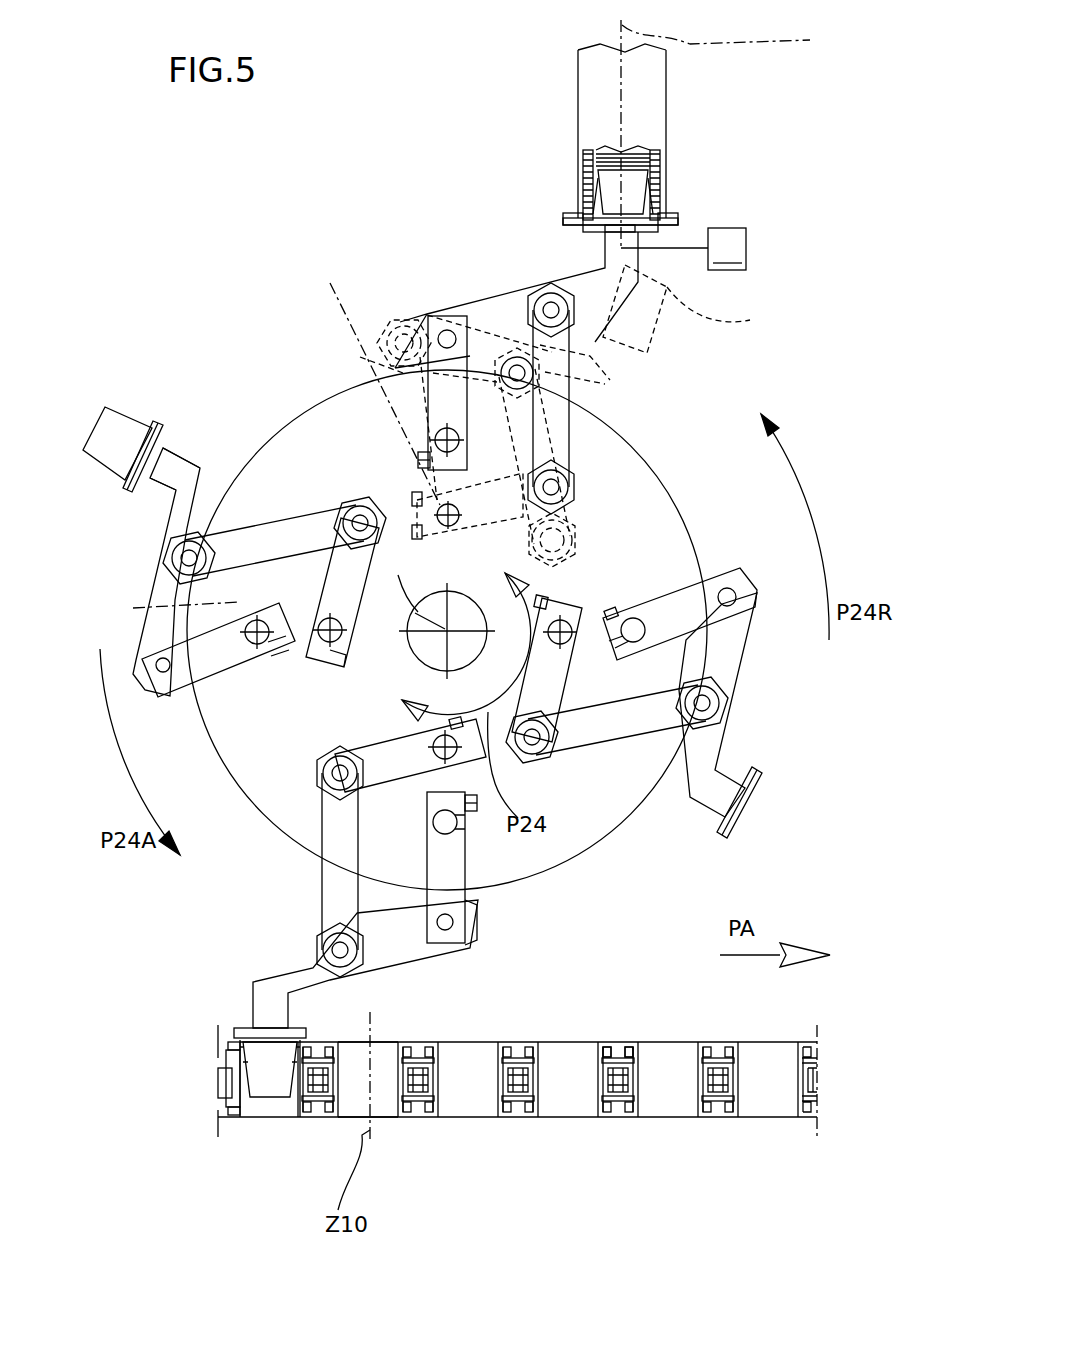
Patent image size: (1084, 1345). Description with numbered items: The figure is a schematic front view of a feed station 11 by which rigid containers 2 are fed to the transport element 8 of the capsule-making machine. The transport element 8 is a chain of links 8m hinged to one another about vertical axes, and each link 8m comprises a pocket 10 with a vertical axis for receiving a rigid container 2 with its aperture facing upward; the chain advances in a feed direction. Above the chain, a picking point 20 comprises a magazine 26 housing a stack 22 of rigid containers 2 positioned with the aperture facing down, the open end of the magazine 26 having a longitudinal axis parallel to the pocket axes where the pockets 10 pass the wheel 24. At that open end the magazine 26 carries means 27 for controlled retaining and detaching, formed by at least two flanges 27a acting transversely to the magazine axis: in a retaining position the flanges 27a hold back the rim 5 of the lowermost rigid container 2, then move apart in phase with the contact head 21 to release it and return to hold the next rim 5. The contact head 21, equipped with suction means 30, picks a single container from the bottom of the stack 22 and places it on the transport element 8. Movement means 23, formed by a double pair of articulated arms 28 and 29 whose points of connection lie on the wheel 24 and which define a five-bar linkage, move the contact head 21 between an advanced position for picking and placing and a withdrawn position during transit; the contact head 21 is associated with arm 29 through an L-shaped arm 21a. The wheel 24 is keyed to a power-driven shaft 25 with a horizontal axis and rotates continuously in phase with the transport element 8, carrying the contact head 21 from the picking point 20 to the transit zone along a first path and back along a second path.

The rigid container 2 is at (115, 425).
The rim 5 is at (668, 210).
The transport element 8 is at (531, 1128).
The chain link 8m is at (606, 1045).
The pocket 10 is at (386, 1058).
The feed station 11 is at (824, 288).
The picking point 20 is at (678, 238).
The contact head 21 is at (588, 232).
The arm 21a is at (185, 478).
The stack 22 is at (653, 150).
The movement means 23 is at (261, 512).
The wheel 24 is at (653, 487).
The power-driven shaft 25 is at (405, 626).
The magazine 26 is at (592, 58).
The means for controlled retaining and detaching 27 is at (555, 215).
The flange 27a is at (568, 217).
The articulated arm 28 is at (305, 578).
The articulated arm 29 is at (466, 300).
The suction means 30 is at (683, 249).